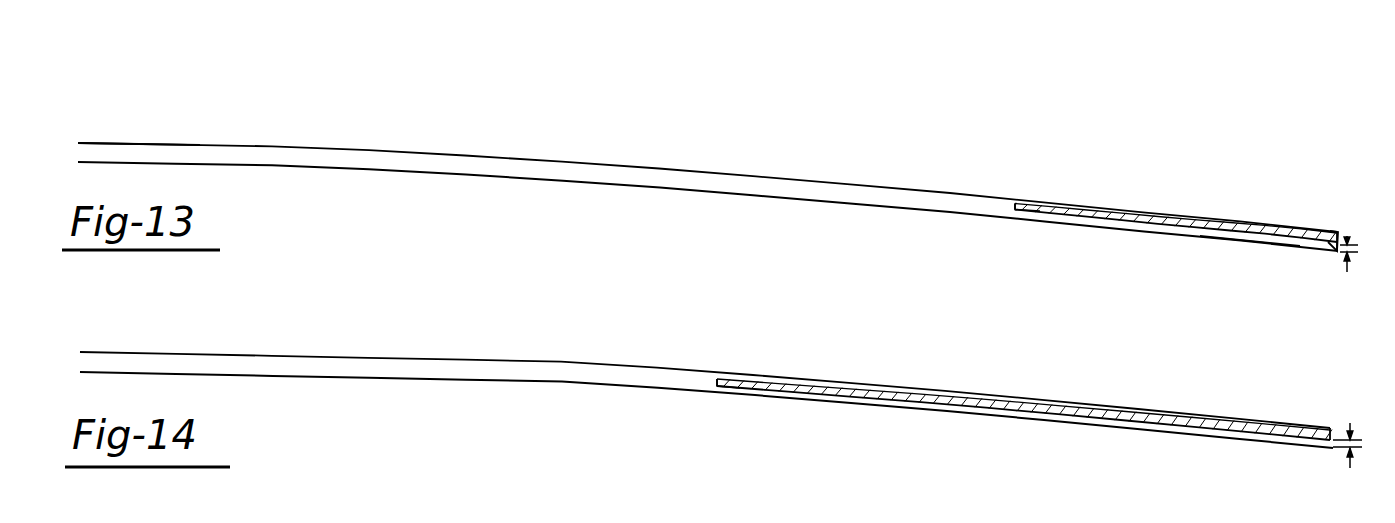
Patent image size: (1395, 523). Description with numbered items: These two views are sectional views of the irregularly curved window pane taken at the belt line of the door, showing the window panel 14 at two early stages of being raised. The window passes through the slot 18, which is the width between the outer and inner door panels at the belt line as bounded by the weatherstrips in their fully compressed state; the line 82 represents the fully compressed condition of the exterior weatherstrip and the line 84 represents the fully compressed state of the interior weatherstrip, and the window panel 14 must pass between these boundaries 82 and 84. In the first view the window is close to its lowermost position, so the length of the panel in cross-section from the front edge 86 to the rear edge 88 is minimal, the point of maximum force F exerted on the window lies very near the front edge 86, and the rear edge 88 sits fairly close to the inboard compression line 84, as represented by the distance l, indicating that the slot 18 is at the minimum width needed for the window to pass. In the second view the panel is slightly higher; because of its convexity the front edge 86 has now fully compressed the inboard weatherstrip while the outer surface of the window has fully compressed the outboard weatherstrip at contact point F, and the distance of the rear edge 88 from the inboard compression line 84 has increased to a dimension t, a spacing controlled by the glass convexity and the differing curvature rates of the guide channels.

In FIG. 13, the slot 18 is at (80, 151).
In FIG. 13, the line representing the fully compressed condition of the exterior weatherstrip 82 is at (690, 171).
In FIG. 14, the line representing the fully compressed condition of the exterior weatherstrip 82 is at (705, 390).
In FIG. 13, the line representing the fully compressed state of the interior weatherstrip 84 is at (714, 191).
In FIG. 14, the line representing the fully compressed state of the interior weatherstrip 84 is at (607, 384).
In FIG. 13, the front edge 86 is at (1022, 205).
In FIG. 14, the front edge 86 is at (698, 386).
In FIG. 13, the rear edge 88 is at (1338, 232).
In FIG. 13, the window panel 14 is at (1248, 238).
In FIG. 13, the point of maximum force F is at (1132, 211).
In FIG. 14, the point of maximum force F is at (1010, 395).
In FIG. 13, the distance l is at (1349, 240).
In FIG. 14, the dimension t is at (1347, 432).